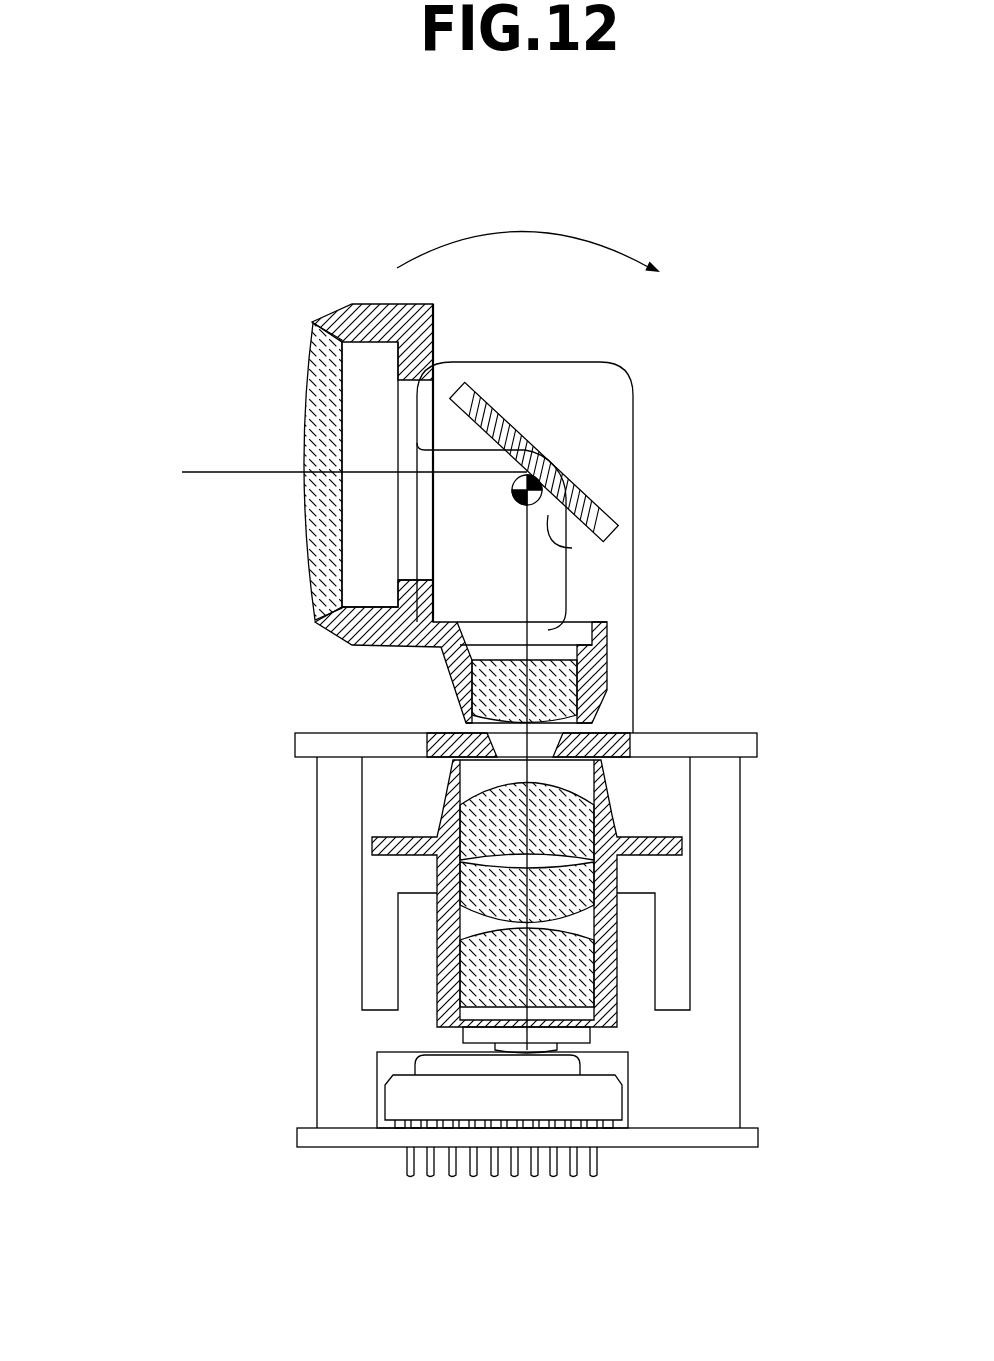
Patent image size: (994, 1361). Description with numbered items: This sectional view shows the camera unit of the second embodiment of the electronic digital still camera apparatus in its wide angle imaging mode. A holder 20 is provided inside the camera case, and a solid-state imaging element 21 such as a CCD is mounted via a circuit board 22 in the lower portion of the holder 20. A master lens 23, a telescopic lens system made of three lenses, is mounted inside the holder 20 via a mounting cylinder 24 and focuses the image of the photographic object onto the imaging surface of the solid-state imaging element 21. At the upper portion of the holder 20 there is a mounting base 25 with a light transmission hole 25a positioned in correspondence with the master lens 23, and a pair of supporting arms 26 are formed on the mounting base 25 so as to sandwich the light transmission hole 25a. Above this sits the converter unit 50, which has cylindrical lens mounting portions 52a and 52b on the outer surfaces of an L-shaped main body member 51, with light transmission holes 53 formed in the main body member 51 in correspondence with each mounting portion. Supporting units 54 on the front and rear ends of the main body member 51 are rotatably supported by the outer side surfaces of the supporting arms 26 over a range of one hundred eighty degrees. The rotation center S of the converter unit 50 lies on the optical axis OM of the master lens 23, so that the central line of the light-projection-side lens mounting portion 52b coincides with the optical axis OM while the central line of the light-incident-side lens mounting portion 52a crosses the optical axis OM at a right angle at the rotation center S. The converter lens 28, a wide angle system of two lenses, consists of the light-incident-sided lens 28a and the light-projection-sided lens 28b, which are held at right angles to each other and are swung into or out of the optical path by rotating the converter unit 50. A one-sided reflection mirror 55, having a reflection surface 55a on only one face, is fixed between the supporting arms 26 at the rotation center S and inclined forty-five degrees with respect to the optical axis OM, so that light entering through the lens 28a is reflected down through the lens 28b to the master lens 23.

The holder 20 is at (752, 1051).
The solid-state imaging element 21 is at (600, 1097).
The circuit board 22 is at (345, 1140).
The master lens 23 is at (478, 958).
The mounting cylinder 24 is at (607, 927).
The mounting base 25 is at (330, 735).
The light transmission hole 25a is at (547, 757).
The supporting arms 26 is at (622, 377).
The converter lens 28 is at (326, 476).
The light-incident-sided lens 28a is at (231, 424).
The light-projection-sided lens 28b is at (363, 651).
The converter unit 50 is at (375, 296).
The main body member 51 is at (455, 362).
The lens mounting portion 52a is at (343, 320).
The lens mounting portion 52b is at (458, 685).
The light transmission holes 53 is at (403, 497).
The supporting unit 54 is at (482, 462).
The reflection mirror 55 is at (590, 497).
The reflection surface 55a is at (572, 548).
The rotation center S is at (517, 503).
The optical axis OM is at (487, 808).